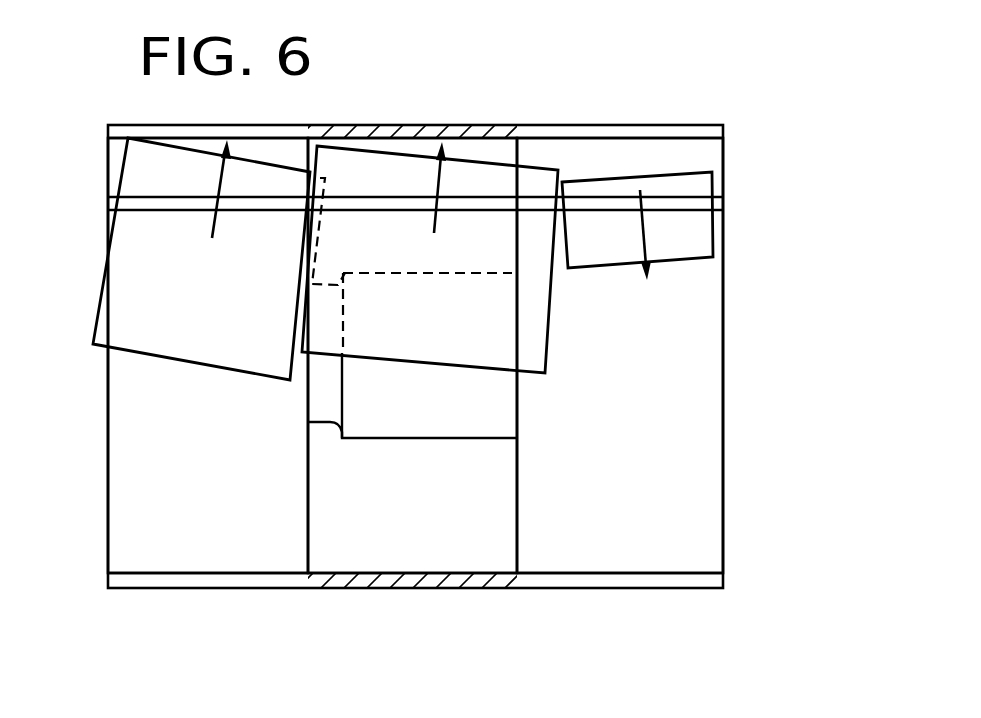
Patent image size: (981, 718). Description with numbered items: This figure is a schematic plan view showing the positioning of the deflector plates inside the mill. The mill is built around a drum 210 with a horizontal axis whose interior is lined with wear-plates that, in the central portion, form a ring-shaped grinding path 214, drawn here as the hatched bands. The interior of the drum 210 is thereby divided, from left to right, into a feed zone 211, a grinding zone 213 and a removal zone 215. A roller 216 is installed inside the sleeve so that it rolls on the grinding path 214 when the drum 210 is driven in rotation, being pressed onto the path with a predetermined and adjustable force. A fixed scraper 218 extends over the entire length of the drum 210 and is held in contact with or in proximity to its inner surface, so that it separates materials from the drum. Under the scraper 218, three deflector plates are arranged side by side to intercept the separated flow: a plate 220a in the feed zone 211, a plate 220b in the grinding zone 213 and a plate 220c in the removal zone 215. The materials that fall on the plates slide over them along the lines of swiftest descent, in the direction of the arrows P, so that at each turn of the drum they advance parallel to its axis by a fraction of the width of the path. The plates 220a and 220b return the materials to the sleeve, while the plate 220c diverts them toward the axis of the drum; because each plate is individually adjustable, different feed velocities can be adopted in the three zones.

The drum 210 is at (208, 578).
The feed zone 211 is at (218, 513).
The grinding zone 213 is at (448, 513).
The grinding path 214 is at (348, 582).
The removal zone 215 is at (640, 515).
The roller 216 is at (495, 433).
The scraper 218 is at (703, 206).
The deflector plate 220a is at (245, 305).
The deflector plate 220b is at (416, 262).
The deflector plate 220c is at (635, 248).